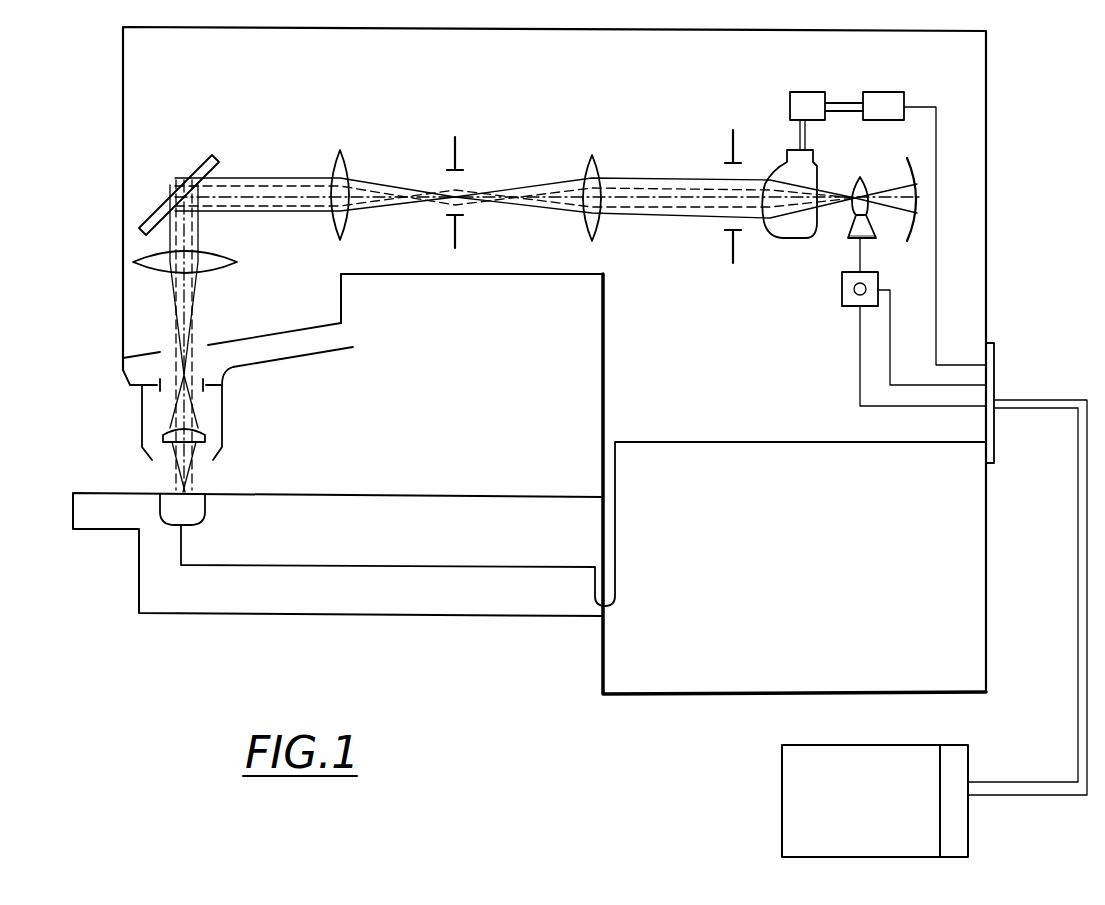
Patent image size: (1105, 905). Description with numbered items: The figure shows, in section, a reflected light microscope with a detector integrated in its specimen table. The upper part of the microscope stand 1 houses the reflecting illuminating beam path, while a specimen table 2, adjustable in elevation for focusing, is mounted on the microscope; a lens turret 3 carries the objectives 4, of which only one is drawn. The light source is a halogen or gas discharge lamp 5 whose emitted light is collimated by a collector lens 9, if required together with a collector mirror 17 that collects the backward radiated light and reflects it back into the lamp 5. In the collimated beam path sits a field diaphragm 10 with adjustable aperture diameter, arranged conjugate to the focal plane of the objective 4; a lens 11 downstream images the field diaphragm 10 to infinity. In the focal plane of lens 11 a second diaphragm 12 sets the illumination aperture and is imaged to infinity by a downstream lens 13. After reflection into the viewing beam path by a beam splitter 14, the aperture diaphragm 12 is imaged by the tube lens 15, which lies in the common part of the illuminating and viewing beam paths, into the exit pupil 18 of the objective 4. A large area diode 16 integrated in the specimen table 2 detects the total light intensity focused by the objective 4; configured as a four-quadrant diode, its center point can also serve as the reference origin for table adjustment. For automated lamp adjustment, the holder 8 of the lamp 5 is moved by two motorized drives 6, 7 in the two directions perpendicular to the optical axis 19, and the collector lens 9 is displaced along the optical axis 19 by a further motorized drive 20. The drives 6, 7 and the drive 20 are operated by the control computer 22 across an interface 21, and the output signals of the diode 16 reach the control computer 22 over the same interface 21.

The upper part of the microscope stand 1 is at (986, 117).
The specimen table 2 is at (503, 606).
The lens turret 3 is at (343, 332).
The objective 4 is at (140, 422).
The lamp 5 is at (865, 178).
The motorized drive 6 is at (853, 308).
The motorized drive 7 is at (843, 290).
The holder 8 is at (852, 234).
The collector lens 9 is at (774, 172).
The field diaphragm 10 is at (720, 142).
The lens 11 is at (592, 155).
The second diaphragm 12 is at (455, 137).
The lens 13 is at (342, 152).
The beam splitter 14 is at (216, 158).
The tube lens 15 is at (135, 262).
The large area diode 16 is at (195, 512).
The collector mirror 17 is at (918, 184).
The exit pupil 18 is at (220, 408).
The optical axis 19 is at (620, 197).
The motorized drive 20 is at (885, 92).
The interface 21 is at (994, 370).
The control computer 22 is at (790, 806).